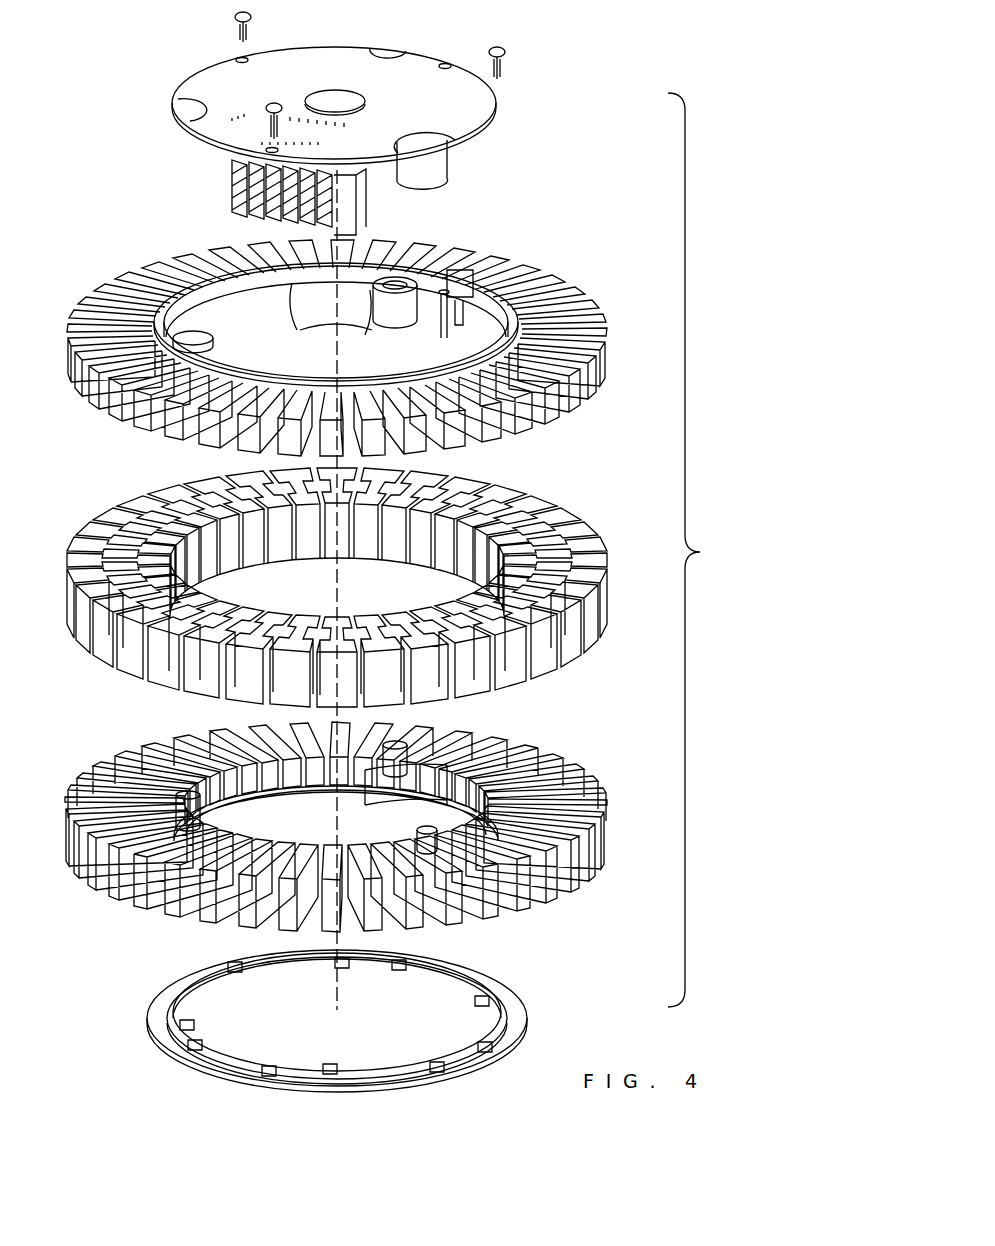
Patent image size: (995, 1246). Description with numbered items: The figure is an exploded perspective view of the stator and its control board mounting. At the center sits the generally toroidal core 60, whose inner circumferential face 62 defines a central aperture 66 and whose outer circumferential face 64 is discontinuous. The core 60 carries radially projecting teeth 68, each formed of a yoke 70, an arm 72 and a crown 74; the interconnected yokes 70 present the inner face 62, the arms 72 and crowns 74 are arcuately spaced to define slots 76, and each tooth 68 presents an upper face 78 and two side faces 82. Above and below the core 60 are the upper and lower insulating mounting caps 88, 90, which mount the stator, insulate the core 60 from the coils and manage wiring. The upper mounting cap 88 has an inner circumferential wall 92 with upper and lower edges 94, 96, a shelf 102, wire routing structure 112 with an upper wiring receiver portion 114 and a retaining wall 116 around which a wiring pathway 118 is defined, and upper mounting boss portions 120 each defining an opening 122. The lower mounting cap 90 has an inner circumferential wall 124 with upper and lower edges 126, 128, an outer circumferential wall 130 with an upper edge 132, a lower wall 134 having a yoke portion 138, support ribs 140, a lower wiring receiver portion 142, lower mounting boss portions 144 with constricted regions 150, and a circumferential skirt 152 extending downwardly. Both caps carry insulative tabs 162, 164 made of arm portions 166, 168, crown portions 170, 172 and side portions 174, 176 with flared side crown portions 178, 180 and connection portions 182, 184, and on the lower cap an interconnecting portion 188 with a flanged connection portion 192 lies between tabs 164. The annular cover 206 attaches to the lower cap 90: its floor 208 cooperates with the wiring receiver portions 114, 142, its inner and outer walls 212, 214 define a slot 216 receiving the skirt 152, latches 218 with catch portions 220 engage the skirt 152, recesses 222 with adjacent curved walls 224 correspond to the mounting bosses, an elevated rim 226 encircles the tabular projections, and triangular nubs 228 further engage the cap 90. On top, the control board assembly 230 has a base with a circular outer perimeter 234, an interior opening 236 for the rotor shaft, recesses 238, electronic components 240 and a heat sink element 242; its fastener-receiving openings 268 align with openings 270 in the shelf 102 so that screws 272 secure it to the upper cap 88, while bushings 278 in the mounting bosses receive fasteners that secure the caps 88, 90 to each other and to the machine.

The core 60 is at (587, 510).
The inner circumferential face 62 is at (393, 542).
The outer circumferential face 64 is at (587, 625).
The central aperture 66 is at (270, 568).
The teeth 68 is at (445, 625).
The yoke 70 is at (287, 505).
The arm 72 is at (257, 488).
The crown 74 is at (250, 473).
The slots 76 is at (517, 498).
The upper face 78 is at (73, 580).
The side faces 82 is at (237, 492).
The upper insulating mounting cap 88 is at (339, 333).
The lower insulating mounting cap 90 is at (343, 827).
The inner circumferential wall 92 is at (280, 307).
The upper edge 94 is at (293, 287).
The lower edge 96 is at (340, 317).
The shelf 102 is at (207, 297).
The wire routing structure 112 is at (398, 275).
The upper wiring receiver portion 114 is at (503, 323).
The circumferential retaining wall 116 is at (495, 313).
The wiring pathway 118 is at (500, 357).
The upper mounting boss portions 120 is at (213, 345).
The opening 122 is at (147, 270).
The inner circumferential wall 124 is at (240, 800).
The upper edge 126 is at (283, 793).
The lower edge 128 is at (288, 783).
The outer circumferential wall 130 is at (500, 833).
The upper edge 132 is at (505, 818).
The lower wall 134 is at (520, 800).
The yoke portion 138 is at (165, 830).
The support ribs 140 is at (505, 843).
The lower wiring receiver portion 142 is at (482, 777).
The lower mounting boss portions 144 is at (420, 840).
The constricted regions 150 is at (400, 800).
The circumferential skirt 152 is at (243, 803).
The upper insulative tabs 162 is at (67, 385).
The lower insulative tabs 164 is at (62, 860).
The arm portion 166 is at (145, 272).
The arm portion 168 is at (250, 927).
The crown portion 170 is at (140, 285).
The crown portion 172 is at (95, 867).
The side portions 174 is at (103, 312).
The side portions 176 is at (140, 897).
The flared side crown portion 178 is at (98, 298).
The flared side crown portion 180 is at (113, 887).
The connection portion 182 is at (220, 450).
The connection portion 184 is at (527, 755).
The interconnecting portion 188 is at (253, 778).
The flanged connection portion 192 is at (400, 748).
The cover 206 is at (543, 1013).
The floor 208 is at (442, 980).
The inner walls 212 is at (223, 980).
The outer walls 214 is at (227, 970).
The slot 216 is at (502, 1000).
The latches 218 is at (338, 963).
The catch portions 220 is at (498, 1032).
The recesses 222 is at (410, 957).
The curved walls 224 is at (388, 963).
The elevated rim 226 is at (152, 1033).
The triangular nubs 228 is at (320, 1067).
The control board assembly 230 is at (468, 43).
The outer perimeter 234 is at (195, 135).
The interior opening 236 is at (327, 100).
The recesses 238 is at (395, 53).
The electronic components 240 is at (437, 167).
The heat sink element 242 is at (347, 192).
The fastener-receiving openings 268 is at (237, 55).
The fastener-receiving openings 270 is at (240, 287).
The screws 272 is at (272, 113).
The bushing 278 is at (427, 732).